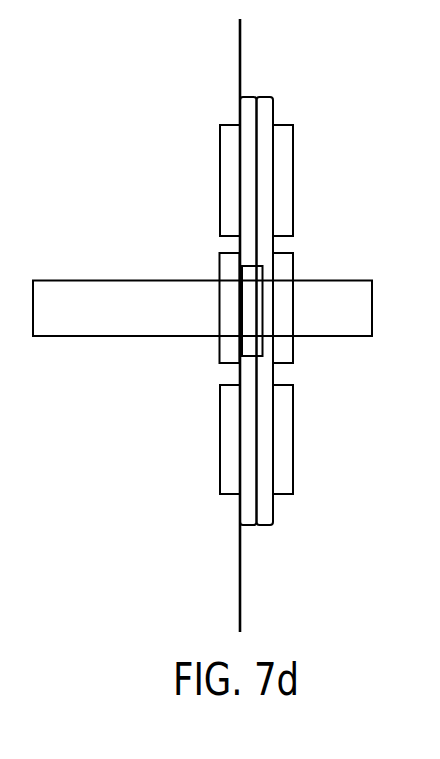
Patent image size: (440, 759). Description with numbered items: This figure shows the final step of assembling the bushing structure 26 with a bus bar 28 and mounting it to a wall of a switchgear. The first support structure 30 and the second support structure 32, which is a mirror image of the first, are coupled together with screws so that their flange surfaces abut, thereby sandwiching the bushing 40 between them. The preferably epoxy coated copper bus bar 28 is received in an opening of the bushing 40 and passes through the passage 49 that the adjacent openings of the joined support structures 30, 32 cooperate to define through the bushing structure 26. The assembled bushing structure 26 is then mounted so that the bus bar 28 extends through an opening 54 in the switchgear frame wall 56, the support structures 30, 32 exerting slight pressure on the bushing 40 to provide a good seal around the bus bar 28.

The bushing structure 26 is at (269, 93).
The bus bar 28 is at (81, 320).
The first support structure 30 is at (206, 155).
The second support structure 32 is at (280, 142).
The bushing 40 is at (263, 278).
The passage 49 is at (217, 337).
The opening 54 is at (228, 128).
The switchgear frame wall 56 is at (240, 583).